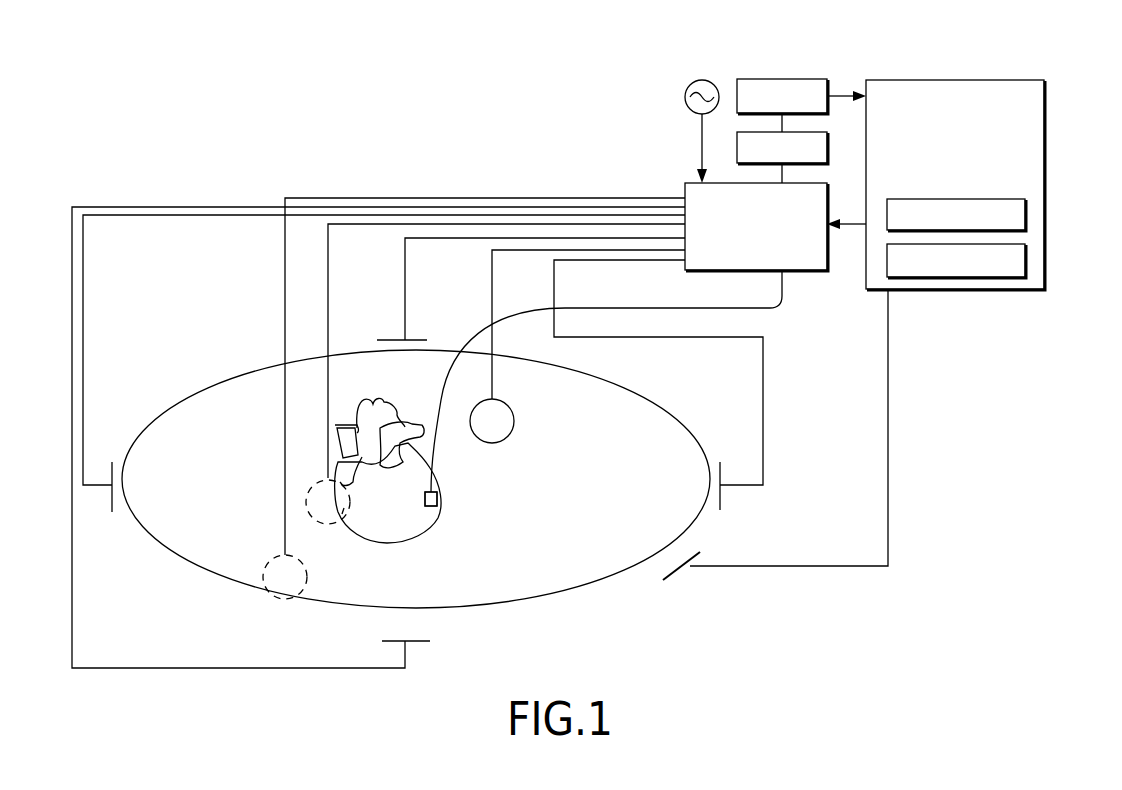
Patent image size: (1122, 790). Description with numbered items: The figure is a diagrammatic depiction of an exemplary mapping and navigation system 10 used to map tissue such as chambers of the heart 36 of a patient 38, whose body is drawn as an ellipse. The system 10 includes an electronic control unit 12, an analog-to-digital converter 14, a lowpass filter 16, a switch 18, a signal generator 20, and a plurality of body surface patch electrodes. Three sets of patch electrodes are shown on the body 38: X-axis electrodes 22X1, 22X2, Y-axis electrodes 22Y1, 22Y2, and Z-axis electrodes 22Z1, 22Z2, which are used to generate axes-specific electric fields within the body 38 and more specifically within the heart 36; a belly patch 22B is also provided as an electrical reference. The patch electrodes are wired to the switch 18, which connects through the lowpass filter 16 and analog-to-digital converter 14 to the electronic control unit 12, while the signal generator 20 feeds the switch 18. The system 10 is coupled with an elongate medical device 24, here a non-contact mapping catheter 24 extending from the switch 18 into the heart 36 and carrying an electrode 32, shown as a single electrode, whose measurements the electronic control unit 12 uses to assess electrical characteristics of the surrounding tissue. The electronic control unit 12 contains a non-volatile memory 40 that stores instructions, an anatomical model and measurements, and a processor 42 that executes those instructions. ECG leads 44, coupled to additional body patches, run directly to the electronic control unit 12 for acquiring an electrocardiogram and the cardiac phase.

The mapping and navigation system 10 is at (229, 106).
The electronic control unit 12 is at (994, 185).
The analog-to-digital converter 14 is at (794, 79).
The lowpass filter 16 is at (827, 140).
The switch 18 is at (745, 252).
The signal generator 20 is at (689, 85).
The belly patch electrode 22B is at (285, 519).
The X-axis patch electrode 22X1 is at (112, 512).
The X-axis patch electrode 22X2 is at (720, 497).
The Y-axis patch electrode 22Y1 is at (493, 376).
The Y-axis patch electrode 22Y2 is at (327, 428).
The Z-axis patch electrode 22Z1 is at (397, 340).
The Z-axis patch electrode 22Z2 is at (407, 648).
The elongate medical device 24 is at (784, 296).
The electrode 32 is at (432, 507).
The heart 36 is at (437, 497).
The patient 38 is at (627, 390).
The non-volatile memory 40 is at (1026, 212).
The processor 42 is at (1026, 262).
The ECG leads 44 is at (888, 383).